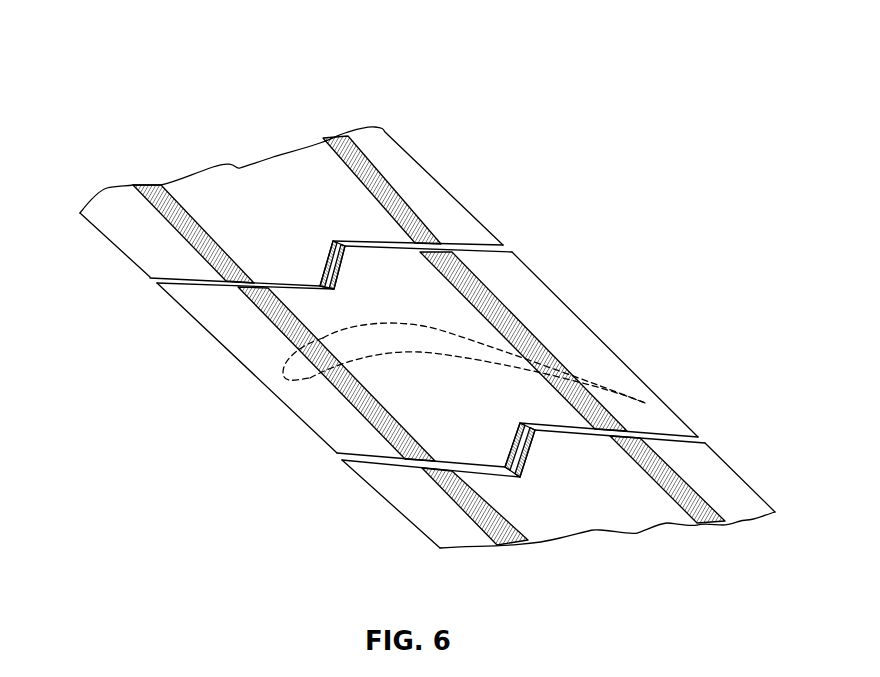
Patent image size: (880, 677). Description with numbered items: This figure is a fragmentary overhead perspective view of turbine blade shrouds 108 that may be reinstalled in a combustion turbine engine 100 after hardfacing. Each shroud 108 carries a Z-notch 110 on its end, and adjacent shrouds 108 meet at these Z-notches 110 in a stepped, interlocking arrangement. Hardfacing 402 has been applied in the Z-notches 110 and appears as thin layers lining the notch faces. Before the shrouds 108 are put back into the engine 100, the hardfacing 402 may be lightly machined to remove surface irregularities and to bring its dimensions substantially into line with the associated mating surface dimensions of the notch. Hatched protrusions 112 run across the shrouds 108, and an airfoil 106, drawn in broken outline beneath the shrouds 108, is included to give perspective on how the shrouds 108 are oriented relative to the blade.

The combustion turbine engine 100 is at (146, 88).
The airfoil 106 is at (352, 400).
The turbine blade shroud 108 is at (432, 188).
The Z-notch 110 is at (322, 272).
The protrusion 112 is at (145, 188).
The hardfacing 402 is at (550, 452).